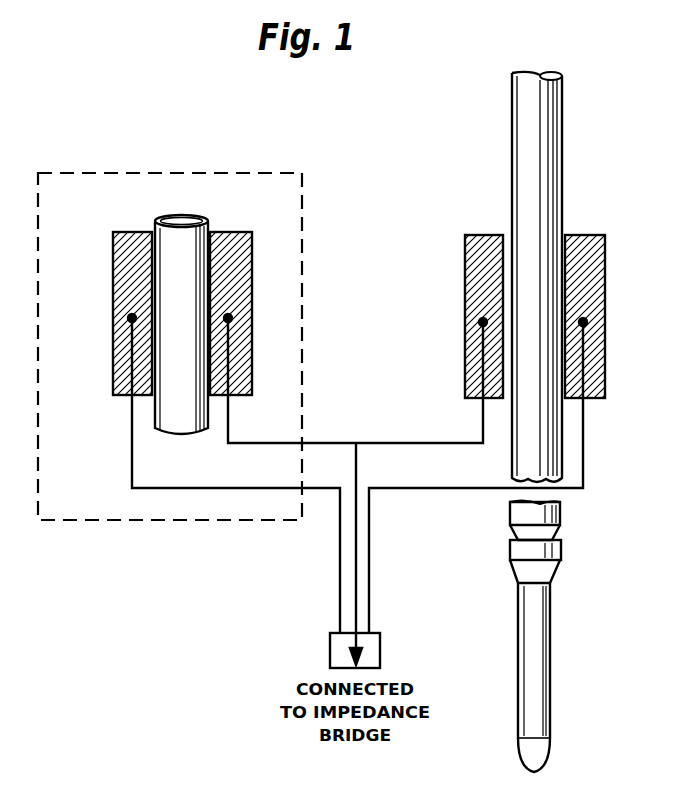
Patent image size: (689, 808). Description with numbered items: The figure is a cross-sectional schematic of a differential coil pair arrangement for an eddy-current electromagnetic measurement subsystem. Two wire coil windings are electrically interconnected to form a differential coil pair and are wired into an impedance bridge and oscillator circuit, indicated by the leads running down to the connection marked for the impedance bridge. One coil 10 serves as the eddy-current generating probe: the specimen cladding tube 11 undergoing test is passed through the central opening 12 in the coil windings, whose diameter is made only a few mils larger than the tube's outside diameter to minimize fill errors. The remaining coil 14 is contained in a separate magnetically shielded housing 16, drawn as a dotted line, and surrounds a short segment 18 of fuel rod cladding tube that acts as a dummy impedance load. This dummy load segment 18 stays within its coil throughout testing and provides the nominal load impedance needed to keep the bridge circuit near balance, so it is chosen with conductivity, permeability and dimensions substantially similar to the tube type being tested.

The probe coil 10 is at (477, 235).
The specimen cladding tube 11 is at (511, 97).
The central opening 12 is at (158, 228).
The dummy load coil 14 is at (243, 318).
The magnetically shielded housing 16 is at (107, 520).
The dummy impedance load tube segment 18 is at (207, 228).